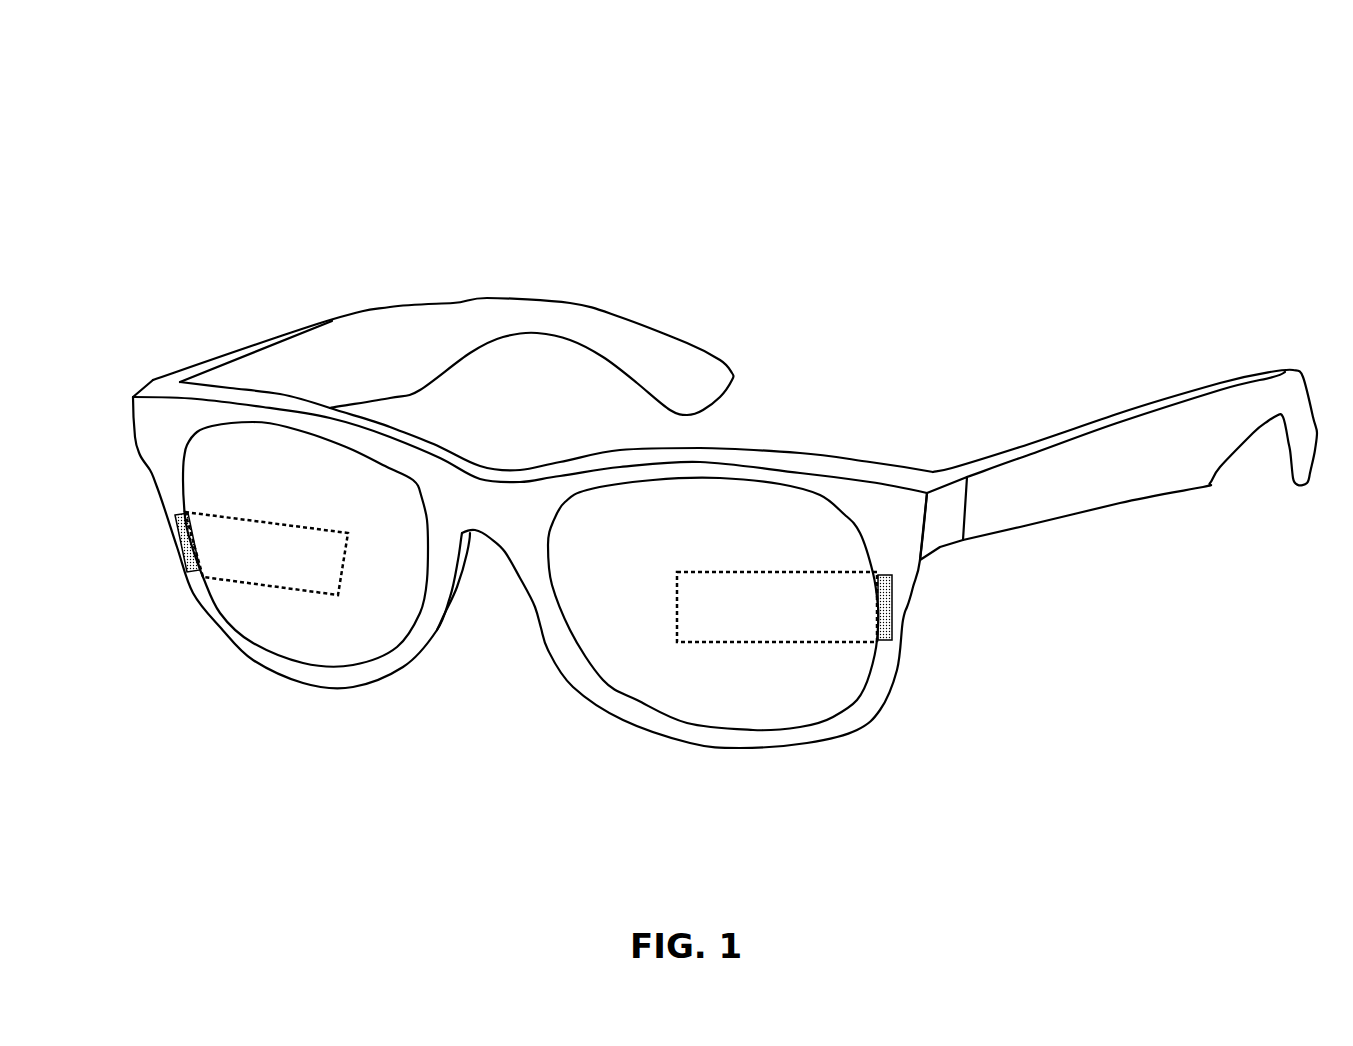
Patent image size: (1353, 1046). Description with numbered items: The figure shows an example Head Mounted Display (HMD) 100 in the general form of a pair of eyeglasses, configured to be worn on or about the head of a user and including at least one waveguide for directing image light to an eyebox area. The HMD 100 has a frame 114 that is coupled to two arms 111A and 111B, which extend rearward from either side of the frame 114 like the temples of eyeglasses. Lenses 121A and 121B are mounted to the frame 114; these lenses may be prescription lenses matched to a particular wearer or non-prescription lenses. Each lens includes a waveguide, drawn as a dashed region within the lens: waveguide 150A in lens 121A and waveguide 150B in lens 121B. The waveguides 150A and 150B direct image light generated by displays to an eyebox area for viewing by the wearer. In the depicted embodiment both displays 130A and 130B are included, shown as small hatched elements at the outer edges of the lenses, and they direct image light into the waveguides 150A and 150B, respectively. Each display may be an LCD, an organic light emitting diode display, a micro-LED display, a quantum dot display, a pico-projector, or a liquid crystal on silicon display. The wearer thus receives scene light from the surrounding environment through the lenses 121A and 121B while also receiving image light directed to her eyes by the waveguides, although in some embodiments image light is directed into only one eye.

The Head Mounted Display 100 is at (1147, 65).
The arm 111A is at (419, 368).
The arm 111B is at (1163, 466).
The frame 114 is at (178, 433).
The lens 121A is at (339, 648).
The lens 121B is at (768, 710).
The display 130A is at (185, 548).
The display 130B is at (893, 610).
The waveguide 150A is at (277, 523).
The waveguide 150B is at (733, 572).